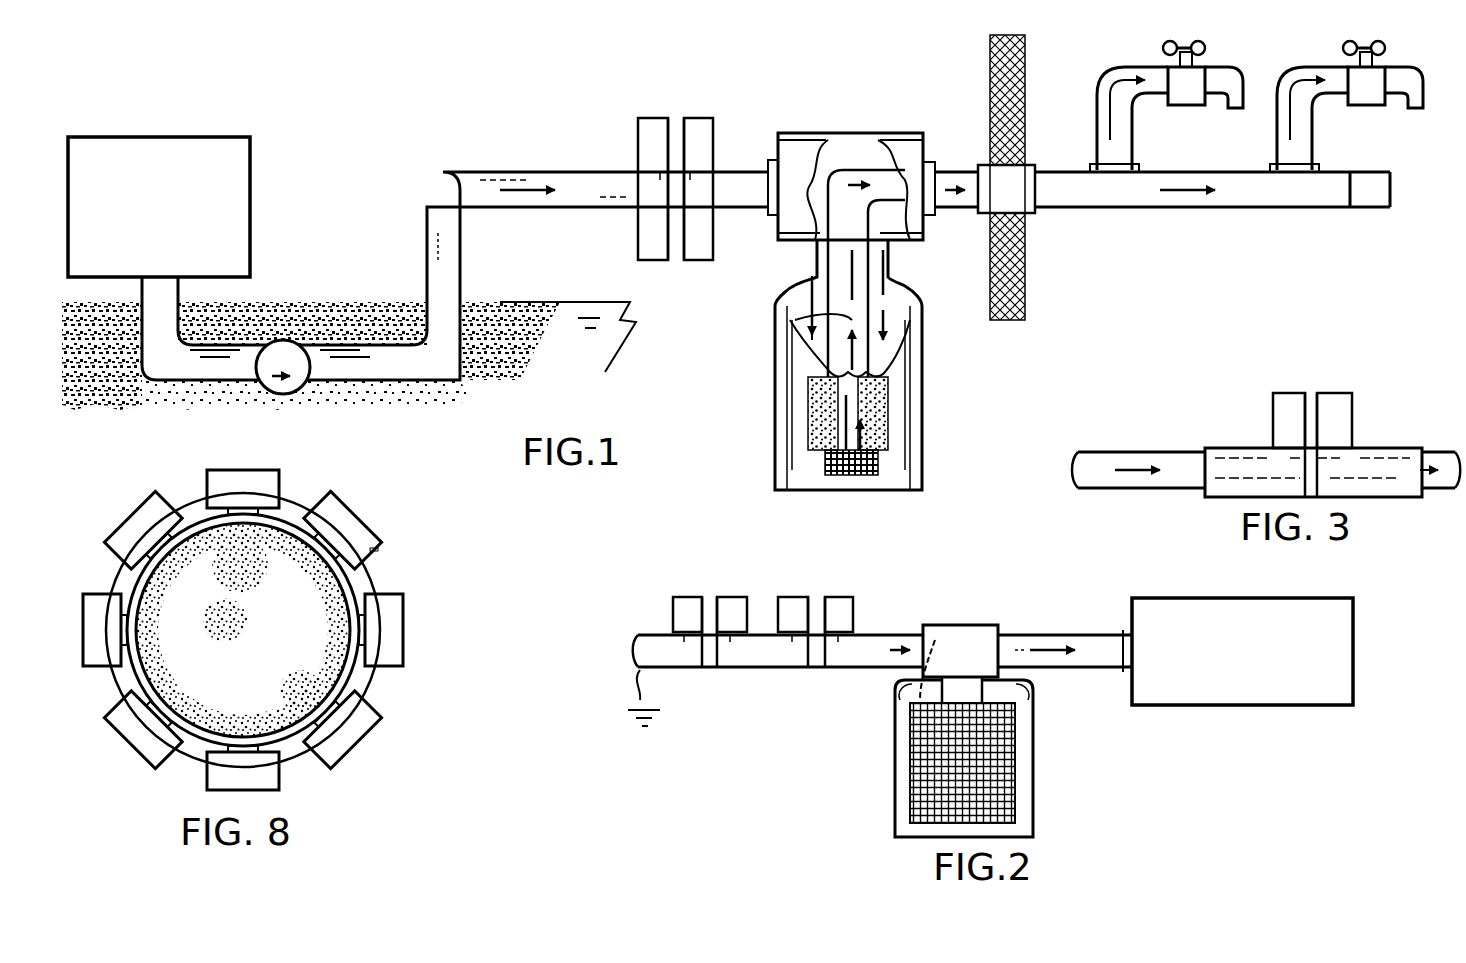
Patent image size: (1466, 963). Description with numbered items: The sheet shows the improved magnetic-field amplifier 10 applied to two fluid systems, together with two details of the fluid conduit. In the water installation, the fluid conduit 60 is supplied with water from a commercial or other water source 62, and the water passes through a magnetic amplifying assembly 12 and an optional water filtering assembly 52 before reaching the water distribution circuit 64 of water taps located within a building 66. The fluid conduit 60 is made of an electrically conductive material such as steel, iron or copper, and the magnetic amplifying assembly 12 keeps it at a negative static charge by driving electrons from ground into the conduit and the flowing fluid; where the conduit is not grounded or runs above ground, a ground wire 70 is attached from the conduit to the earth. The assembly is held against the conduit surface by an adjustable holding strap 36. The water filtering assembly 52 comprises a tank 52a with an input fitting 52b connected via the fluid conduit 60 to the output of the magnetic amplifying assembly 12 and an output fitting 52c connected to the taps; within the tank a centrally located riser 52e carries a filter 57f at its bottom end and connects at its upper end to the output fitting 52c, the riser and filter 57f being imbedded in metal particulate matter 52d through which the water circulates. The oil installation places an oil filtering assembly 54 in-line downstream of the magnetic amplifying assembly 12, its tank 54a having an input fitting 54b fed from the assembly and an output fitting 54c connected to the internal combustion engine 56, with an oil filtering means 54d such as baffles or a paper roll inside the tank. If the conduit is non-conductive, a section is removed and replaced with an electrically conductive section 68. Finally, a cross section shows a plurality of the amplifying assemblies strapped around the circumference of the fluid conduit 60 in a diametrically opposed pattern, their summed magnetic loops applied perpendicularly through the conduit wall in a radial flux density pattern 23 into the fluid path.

In FIG. 1, the magnetic-field amplifier 10 is at (392, 112).
In FIG. 2, the magnetic-field amplifier 10 is at (1016, 556).
In FIG. 1, the magnetic amplifying assembly 12 is at (705, 122).
In FIG. 3, the magnetic amplifying assembly 12 is at (1338, 412).
In FIG. 2, the magnetic amplifying assembly 12 is at (732, 604).
In FIG. 8, the magnetic amplifying assembly 12 is at (322, 512).
In FIG. 8, the radial flux density pattern 23 is at (288, 705).
In FIG. 1, the adjustable holding strap 36 is at (652, 125).
In FIG. 3, the adjustable holding strap 36 is at (1310, 416).
In FIG. 2, the adjustable holding strap 36 is at (710, 667).
In FIG. 8, the adjustable holding strap 36 is at (368, 562).
In FIG. 1, the water filtering assembly 52 is at (839, 274).
In FIG. 1, the tank 52a is at (902, 290).
In FIG. 1, the input fitting 52b is at (772, 160).
In FIG. 1, the output fitting 52c is at (930, 162).
In FIG. 1, the metal particulate matter 52d is at (880, 400).
In FIG. 1, the riser 52e is at (785, 325).
In FIG. 2, the oil filtering assembly 54 is at (961, 697).
In FIG. 2, the tank 54a is at (903, 728).
In FIG. 2, the input fitting 54b is at (915, 640).
In FIG. 2, the output fitting 54c is at (998, 626).
In FIG. 2, the filter cartridge 54d is at (1010, 775).
In FIG. 2, the internal combustion engine 56 is at (1242, 651).
In FIG. 1, the screen 57f is at (826, 462).
In FIG. 1, the fluid conduit 60 is at (480, 175).
In FIG. 3, the fluid conduit 60 is at (1182, 462).
In FIG. 2, the fluid conduit 60 is at (754, 667).
In FIG. 8, the fluid conduit 60 is at (362, 650).
In FIG. 1, the water source 62 is at (159, 207).
In FIG. 1, the water distribution circuit 64 is at (1126, 76).
In FIG. 1, the building 66 is at (1025, 68).
In FIG. 3, the electrically conductive section 68 is at (1355, 470).
In FIG. 1, the ground wire 70 is at (572, 282).